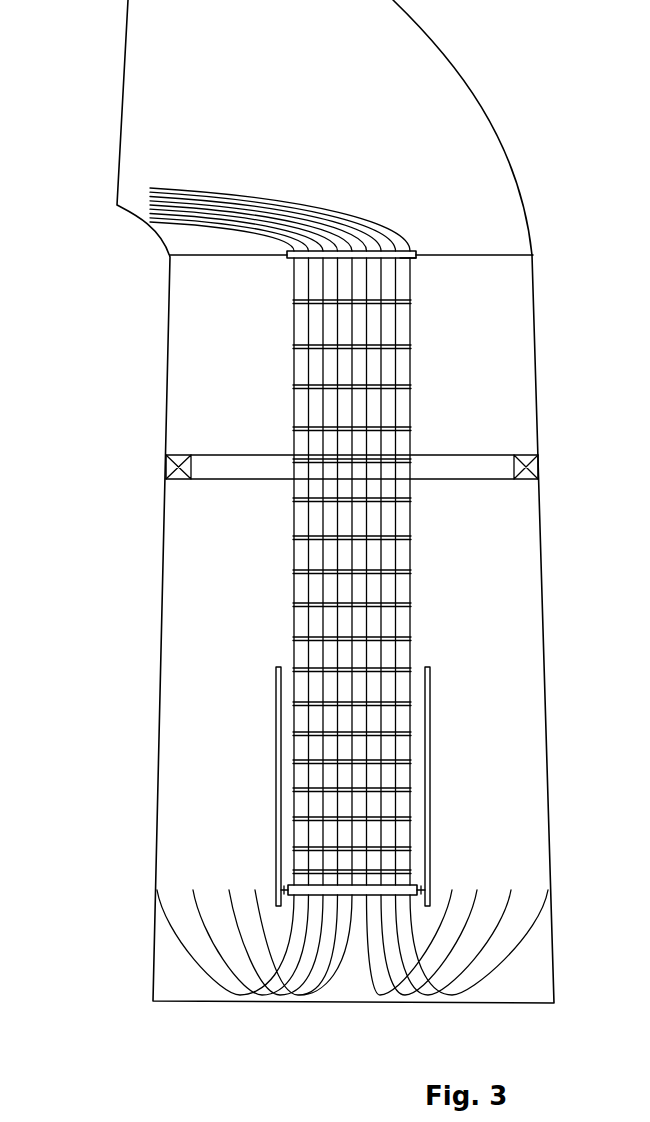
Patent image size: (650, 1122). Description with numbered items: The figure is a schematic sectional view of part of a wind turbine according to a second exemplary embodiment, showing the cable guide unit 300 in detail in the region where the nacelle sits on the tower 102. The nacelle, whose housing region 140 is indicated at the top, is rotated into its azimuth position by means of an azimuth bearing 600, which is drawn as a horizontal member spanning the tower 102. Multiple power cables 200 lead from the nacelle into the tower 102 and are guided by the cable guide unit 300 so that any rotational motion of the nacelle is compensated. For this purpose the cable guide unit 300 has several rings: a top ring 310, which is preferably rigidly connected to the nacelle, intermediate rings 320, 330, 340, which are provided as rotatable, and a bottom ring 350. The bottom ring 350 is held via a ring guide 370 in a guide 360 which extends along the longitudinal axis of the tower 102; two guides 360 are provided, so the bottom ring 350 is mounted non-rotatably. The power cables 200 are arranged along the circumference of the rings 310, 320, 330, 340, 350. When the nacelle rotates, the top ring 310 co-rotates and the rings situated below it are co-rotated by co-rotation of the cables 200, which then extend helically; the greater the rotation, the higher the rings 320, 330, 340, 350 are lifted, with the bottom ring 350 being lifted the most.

The tower 102 is at (162, 568).
The housing nose portion 140 is at (445, 80).
The power cables 200 is at (175, 208).
The cable guide unit 300 is at (417, 254).
The top ring 310 is at (410, 262).
The ring 320 is at (410, 348).
The ring 330 is at (410, 505).
The ring 340 is at (410, 638).
The bottom ring 350 is at (323, 987).
The guide 360 is at (276, 688).
The ring guide 370 is at (275, 887).
The azimuth bearing 600 is at (166, 467).